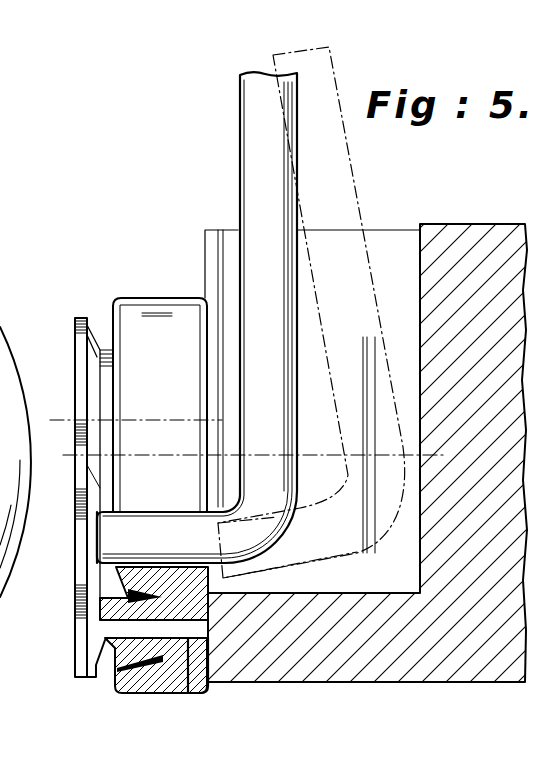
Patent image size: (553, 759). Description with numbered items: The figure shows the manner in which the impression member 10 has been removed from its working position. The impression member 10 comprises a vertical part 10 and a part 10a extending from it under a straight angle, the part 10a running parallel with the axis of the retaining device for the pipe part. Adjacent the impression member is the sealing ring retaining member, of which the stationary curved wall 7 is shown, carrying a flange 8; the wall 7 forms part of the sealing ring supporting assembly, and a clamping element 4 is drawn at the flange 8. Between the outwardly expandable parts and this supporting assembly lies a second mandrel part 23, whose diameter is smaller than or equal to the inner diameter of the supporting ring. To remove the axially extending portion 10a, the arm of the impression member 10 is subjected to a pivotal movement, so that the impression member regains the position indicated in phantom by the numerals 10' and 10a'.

The clamping bracket 4 is at (152, 298).
The stationary curved wall 7 is at (197, 693).
The flange 8 is at (78, 318).
The impression member 10 is at (197, 317).
The impression member in pivoted position 10' is at (323, 312).
The axially extending part of impression member 10a is at (72, 552).
The axially extending part in pivoted position 10a' is at (313, 560).
The second mandrel part 23 is at (410, 663).